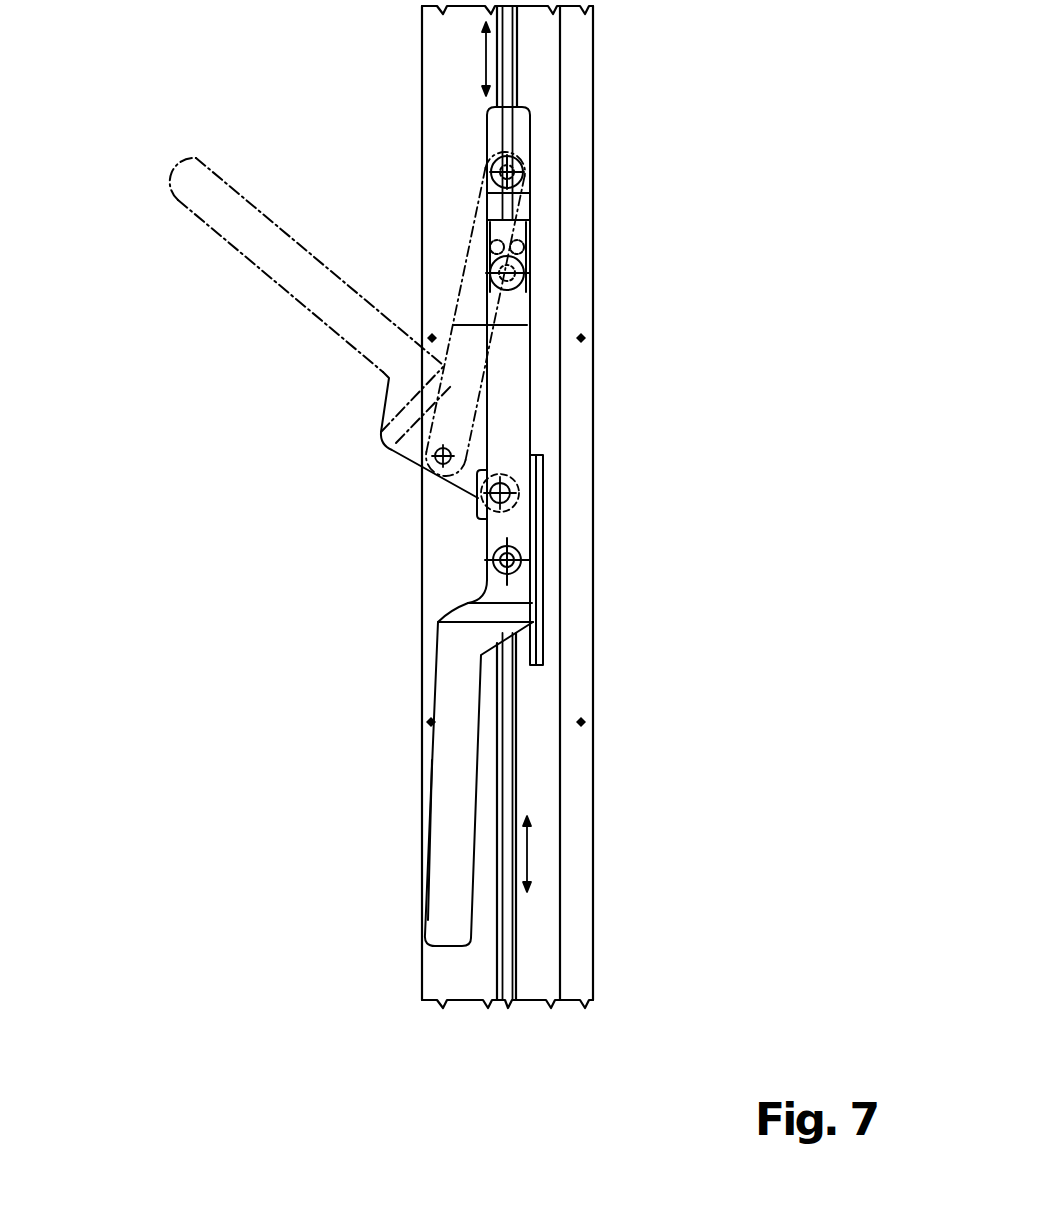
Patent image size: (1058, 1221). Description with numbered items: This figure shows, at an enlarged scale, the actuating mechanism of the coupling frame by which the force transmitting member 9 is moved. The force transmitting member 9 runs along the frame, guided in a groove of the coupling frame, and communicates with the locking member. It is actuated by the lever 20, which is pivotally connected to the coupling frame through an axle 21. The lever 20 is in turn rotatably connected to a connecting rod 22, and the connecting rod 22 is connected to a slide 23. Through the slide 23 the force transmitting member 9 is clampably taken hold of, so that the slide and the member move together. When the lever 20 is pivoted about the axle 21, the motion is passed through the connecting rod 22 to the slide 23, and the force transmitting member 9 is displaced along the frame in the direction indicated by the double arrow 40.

The force transmitting member 9 is at (510, 62).
The lever 20 is at (313, 300).
The axle 21 is at (470, 497).
The connecting rod 22 is at (470, 365).
The slide 23 is at (522, 132).
The double arrow 40 is at (514, 457).